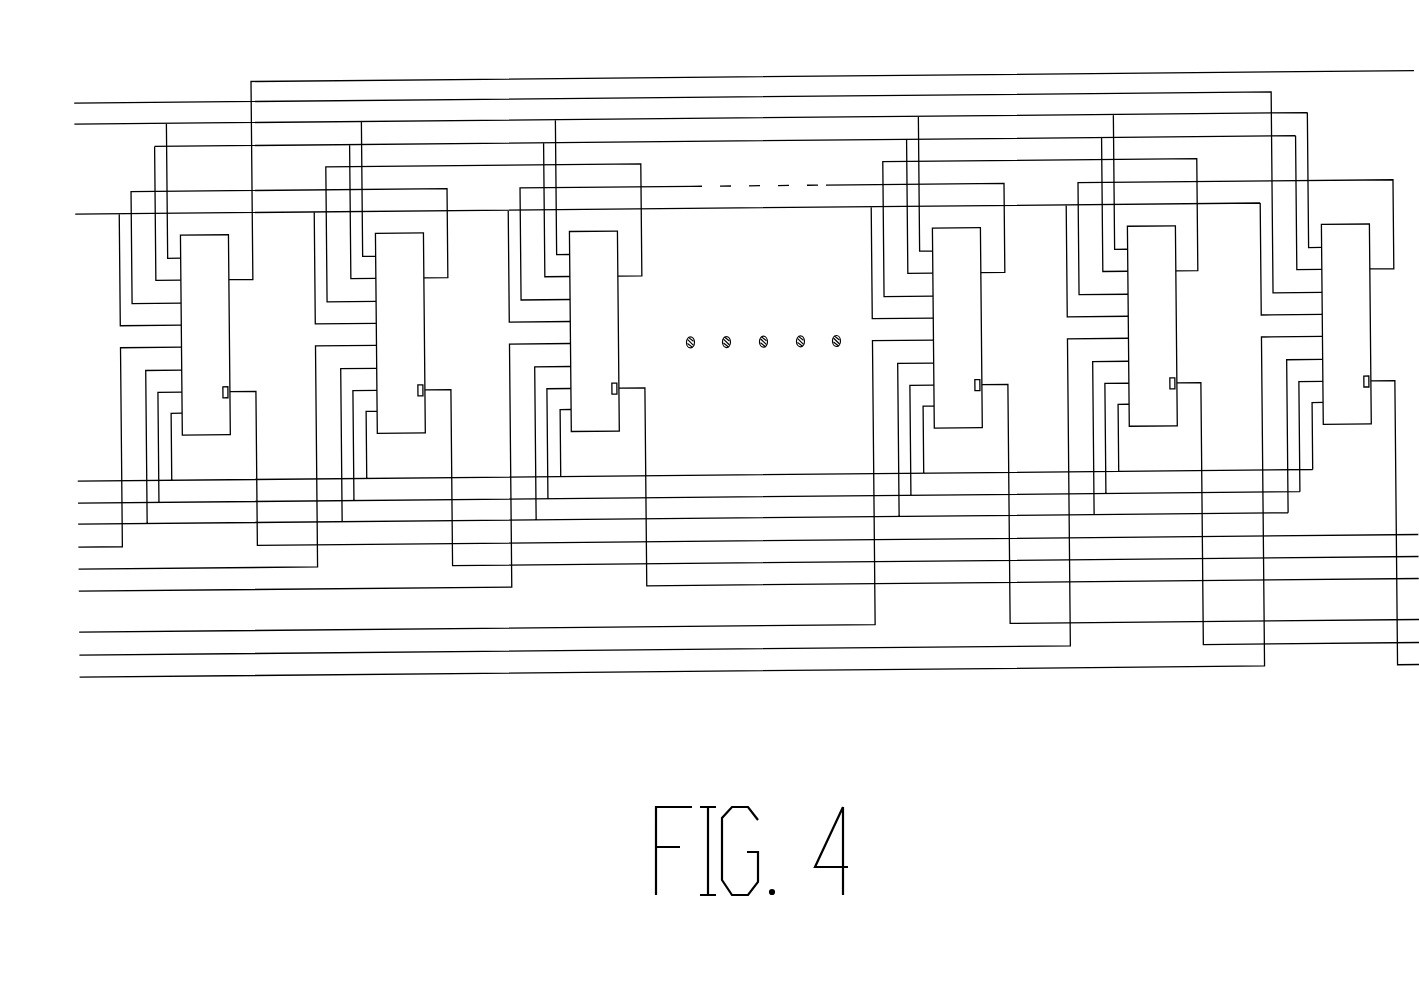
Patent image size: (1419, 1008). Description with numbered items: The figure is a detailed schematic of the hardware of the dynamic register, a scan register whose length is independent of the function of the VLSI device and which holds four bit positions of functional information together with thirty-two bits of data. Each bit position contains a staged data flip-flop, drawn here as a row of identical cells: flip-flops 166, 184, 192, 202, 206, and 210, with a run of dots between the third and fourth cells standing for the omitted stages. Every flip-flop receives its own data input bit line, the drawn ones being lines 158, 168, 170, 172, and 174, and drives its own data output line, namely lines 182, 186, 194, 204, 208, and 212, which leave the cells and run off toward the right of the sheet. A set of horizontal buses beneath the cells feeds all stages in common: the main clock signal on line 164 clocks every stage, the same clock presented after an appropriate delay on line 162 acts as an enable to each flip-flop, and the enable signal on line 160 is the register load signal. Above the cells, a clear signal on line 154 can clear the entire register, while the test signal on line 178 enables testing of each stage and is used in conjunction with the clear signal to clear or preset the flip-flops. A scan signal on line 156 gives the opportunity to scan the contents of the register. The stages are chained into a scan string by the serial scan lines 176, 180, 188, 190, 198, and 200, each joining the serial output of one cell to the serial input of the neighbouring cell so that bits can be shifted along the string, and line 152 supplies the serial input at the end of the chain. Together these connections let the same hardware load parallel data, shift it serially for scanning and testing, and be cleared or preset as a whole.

The serial data input line 152 is at (698, 184).
The clear signal line 154 is at (697, 185).
The scan signal line 156 is at (698, 264).
The data input bit line 158 is at (130, 451).
The register load enable line 160 is at (700, 441).
The delayed clock enable line 162 is at (700, 426).
The main clock line 164 is at (700, 441).
The staged data flip-flop 166 is at (232, 335).
The data input bit line 168 is at (228, 457).
The data input bit line 170 is at (325, 482).
The data input bit line 172 is at (604, 496).
The data input bit line 174 is at (701, 525).
The bit serial scan line 176 is at (289, 231).
The test signal line 178 is at (738, 207).
The bit serial scan line 180 is at (821, 175).
The data output line 182 is at (824, 463).
The staged data flip-flop 184 is at (426, 333).
The data output line 186 is at (922, 473).
The bit serial scan line 188 is at (484, 233).
The bit serial scan line 190 is at (762, 225).
The staged data flip-flop 192 is at (618, 331).
The data output line 194 is at (1019, 484).
The bit serial scan line 198 is at (1040, 228).
The bit serial scan line 200 is at (1236, 221).
The staged data flip-flop 202 is at (981, 328).
The data output line 204 is at (1200, 502).
The staged data flip-flop 206 is at (1177, 326).
The data output line 208 is at (1298, 513).
The staged data flip-flop 210 is at (1370, 324).
The data output line 212 is at (1383, 523).